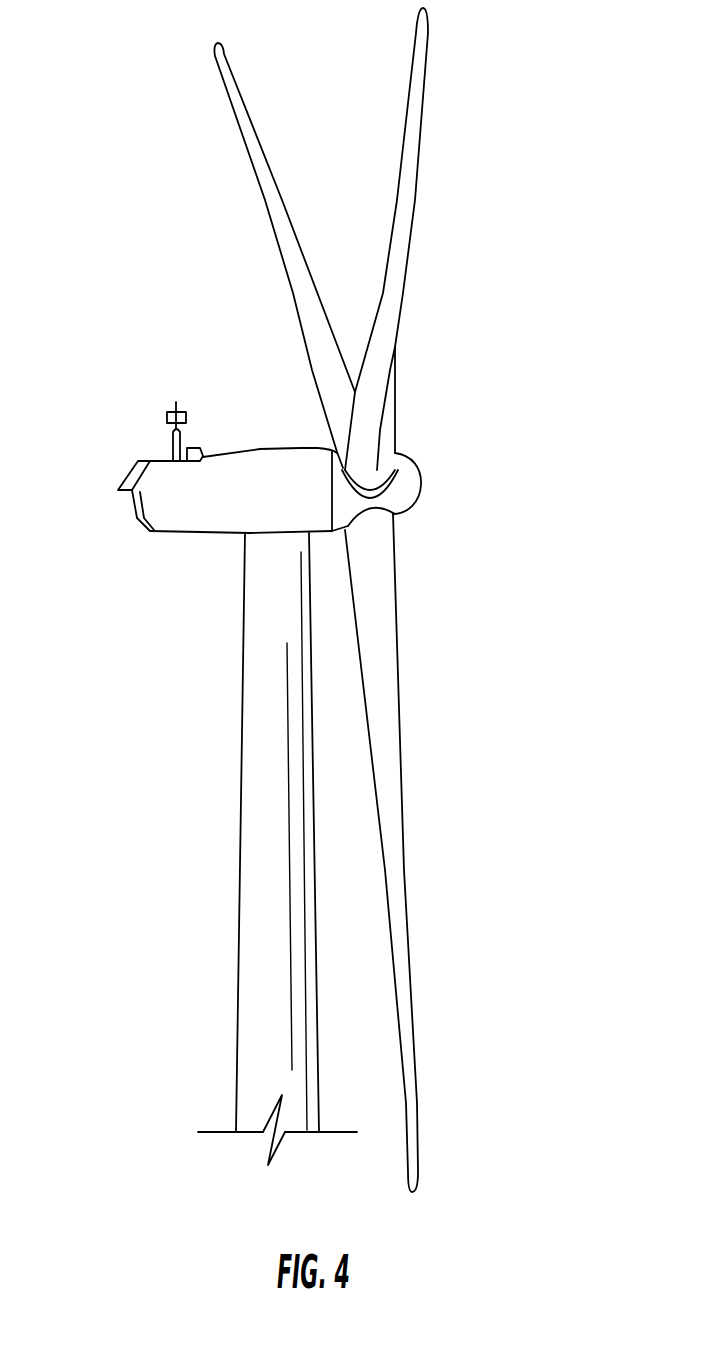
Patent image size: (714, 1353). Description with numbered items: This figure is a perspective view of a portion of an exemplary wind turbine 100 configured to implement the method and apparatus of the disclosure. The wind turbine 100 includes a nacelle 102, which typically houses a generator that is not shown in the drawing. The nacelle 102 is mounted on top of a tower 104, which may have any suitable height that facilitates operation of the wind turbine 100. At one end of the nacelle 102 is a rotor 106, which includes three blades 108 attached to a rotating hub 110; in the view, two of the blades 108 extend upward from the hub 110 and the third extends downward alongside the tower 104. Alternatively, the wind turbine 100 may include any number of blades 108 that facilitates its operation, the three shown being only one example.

The wind turbine 100 is at (100, 140).
The nacelle 102 is at (184, 540).
The tower 104 is at (238, 917).
The rotor 106 is at (520, 316).
The blades 108 is at (259, 137).
The rotating hub 110 is at (418, 488).